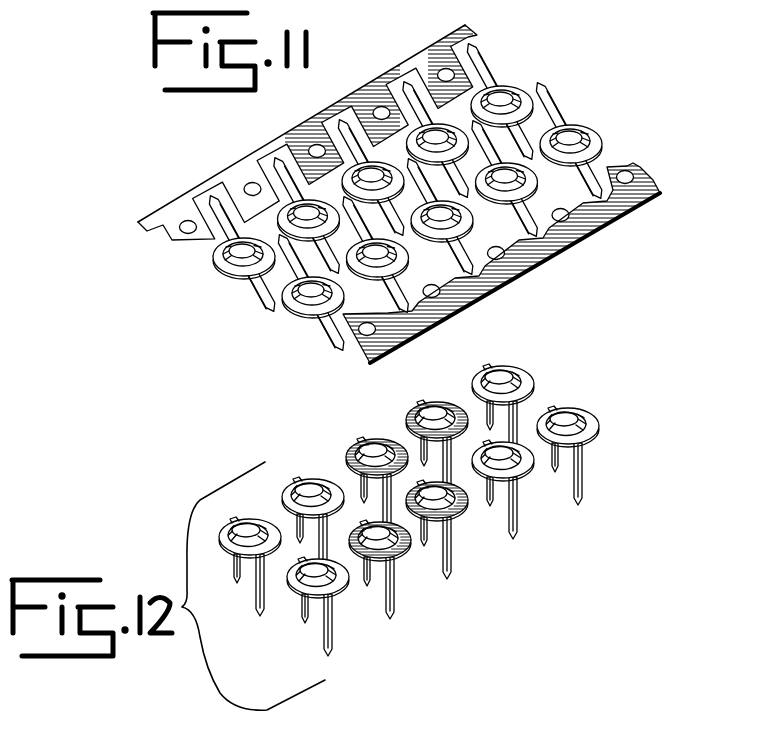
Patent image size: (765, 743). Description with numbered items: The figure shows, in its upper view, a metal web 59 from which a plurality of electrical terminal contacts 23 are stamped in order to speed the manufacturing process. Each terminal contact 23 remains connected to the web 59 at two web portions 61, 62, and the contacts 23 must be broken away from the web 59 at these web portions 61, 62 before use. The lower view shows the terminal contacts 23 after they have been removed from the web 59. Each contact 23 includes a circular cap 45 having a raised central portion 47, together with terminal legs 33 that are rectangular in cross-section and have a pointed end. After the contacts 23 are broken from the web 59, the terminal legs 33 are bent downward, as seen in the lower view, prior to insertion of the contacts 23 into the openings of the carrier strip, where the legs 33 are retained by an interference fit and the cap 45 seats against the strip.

In FIG. 11, the metal web 59 is at (374, 84).
In FIG. 11, the web portion 62 is at (540, 118).
In FIG. 11, the web portion 61 is at (597, 157).
In FIG. 11, the terminal contact 23 is at (315, 297).
In FIG. 12, the terminal contact 23 is at (602, 418).
In FIG. 12, the raised central portion 47 is at (603, 409).
In FIG. 12, the circular cap 45 is at (602, 426).
In FIG. 12, the terminal legs 33 is at (607, 474).